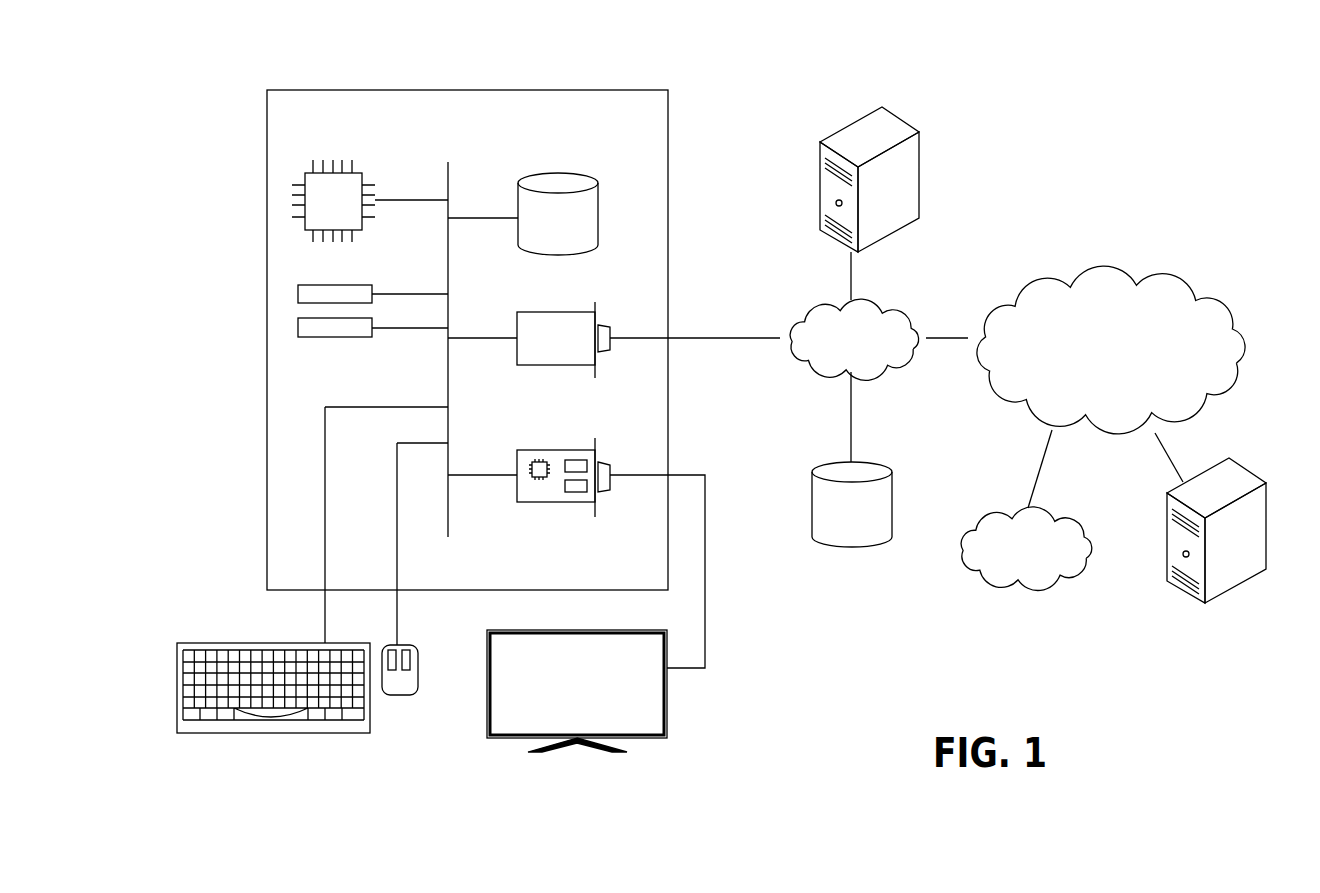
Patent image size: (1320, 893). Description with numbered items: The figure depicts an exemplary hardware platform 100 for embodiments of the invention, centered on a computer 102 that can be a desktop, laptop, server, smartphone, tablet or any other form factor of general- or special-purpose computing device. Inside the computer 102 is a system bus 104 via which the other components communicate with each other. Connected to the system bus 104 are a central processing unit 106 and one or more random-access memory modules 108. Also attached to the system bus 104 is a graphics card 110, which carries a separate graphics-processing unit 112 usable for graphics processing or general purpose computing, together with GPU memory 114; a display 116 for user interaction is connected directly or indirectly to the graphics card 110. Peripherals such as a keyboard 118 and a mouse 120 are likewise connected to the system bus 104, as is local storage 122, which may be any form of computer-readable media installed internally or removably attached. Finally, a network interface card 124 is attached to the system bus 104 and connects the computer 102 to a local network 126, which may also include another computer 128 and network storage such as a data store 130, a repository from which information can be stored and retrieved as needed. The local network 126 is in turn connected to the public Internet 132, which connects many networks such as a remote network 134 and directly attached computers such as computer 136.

The computing system 100 is at (1195, 92).
The computer 102 is at (625, 89).
The system bus 104 is at (448, 171).
The central processing unit 106 is at (357, 171).
The random-access memory modules 108 is at (372, 322).
The graphics card 110 is at (576, 538).
The graphics-processing unit 112 is at (538, 478).
The GPU memory 114 is at (574, 493).
The display 116 is at (668, 720).
The keyboard 118 is at (277, 735).
The mouse 120 is at (397, 697).
The local storage 122 is at (600, 202).
The network interface card 124 is at (517, 322).
The local network 126 is at (905, 303).
The computer 128 is at (905, 121).
The data store 130 is at (887, 467).
The public Internet 132 is at (1155, 266).
The remote network 134 is at (1080, 511).
The computer 136 is at (1243, 471).